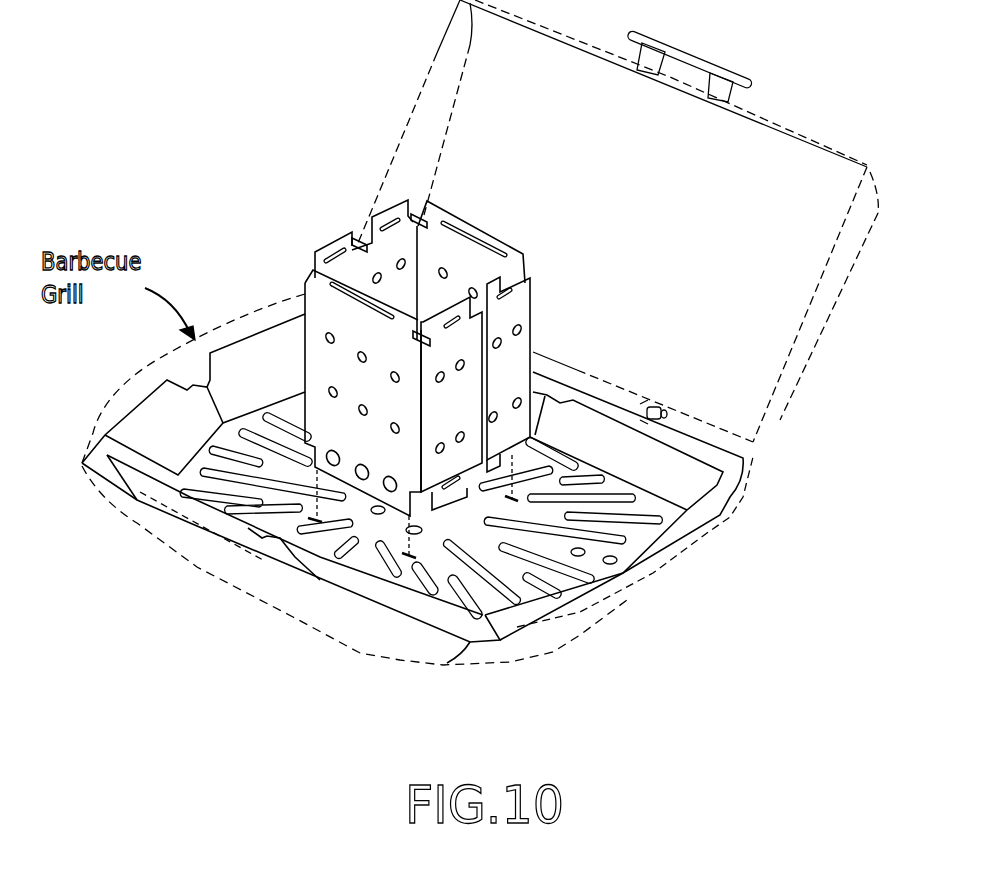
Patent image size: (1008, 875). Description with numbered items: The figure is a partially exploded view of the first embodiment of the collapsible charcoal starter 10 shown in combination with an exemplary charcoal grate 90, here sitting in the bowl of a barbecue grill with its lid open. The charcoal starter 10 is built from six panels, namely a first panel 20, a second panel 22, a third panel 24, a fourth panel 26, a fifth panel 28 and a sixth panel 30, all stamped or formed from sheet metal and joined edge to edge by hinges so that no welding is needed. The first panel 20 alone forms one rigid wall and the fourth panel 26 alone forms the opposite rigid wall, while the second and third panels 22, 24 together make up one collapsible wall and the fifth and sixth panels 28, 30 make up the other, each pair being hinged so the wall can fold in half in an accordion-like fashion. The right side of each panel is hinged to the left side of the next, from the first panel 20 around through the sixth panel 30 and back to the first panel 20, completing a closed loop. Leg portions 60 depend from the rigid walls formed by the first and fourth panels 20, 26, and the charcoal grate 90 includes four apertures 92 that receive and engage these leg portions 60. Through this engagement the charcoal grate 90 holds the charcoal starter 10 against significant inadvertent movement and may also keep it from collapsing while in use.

The charcoal starter 10 is at (367, 297).
The first panel 20 is at (363, 393).
The second panel 22 is at (451, 403).
The third panel 24 is at (508, 374).
The fourth panel 26 is at (471, 270).
The fifth panel 28 is at (389, 252).
The sixth panel 30 is at (317, 275).
The leg portions 60 is at (383, 516).
The charcoal grate 90 is at (677, 352).
The apertures 92 is at (413, 579).